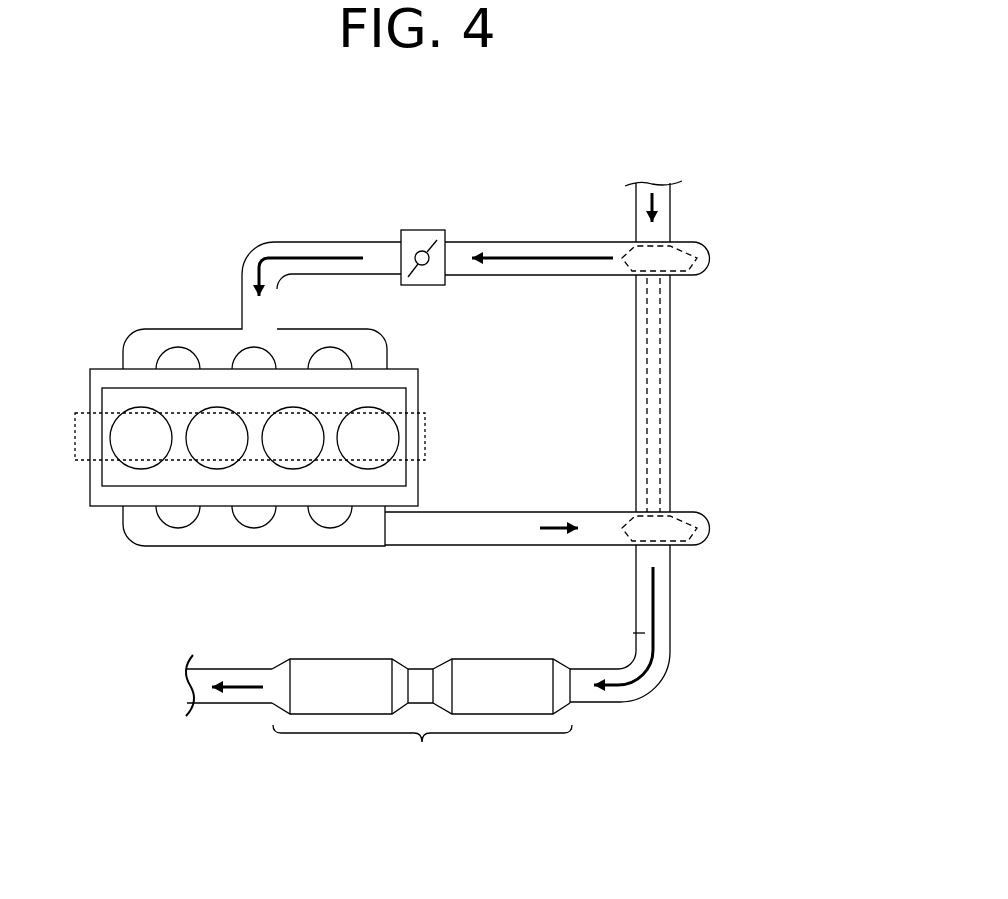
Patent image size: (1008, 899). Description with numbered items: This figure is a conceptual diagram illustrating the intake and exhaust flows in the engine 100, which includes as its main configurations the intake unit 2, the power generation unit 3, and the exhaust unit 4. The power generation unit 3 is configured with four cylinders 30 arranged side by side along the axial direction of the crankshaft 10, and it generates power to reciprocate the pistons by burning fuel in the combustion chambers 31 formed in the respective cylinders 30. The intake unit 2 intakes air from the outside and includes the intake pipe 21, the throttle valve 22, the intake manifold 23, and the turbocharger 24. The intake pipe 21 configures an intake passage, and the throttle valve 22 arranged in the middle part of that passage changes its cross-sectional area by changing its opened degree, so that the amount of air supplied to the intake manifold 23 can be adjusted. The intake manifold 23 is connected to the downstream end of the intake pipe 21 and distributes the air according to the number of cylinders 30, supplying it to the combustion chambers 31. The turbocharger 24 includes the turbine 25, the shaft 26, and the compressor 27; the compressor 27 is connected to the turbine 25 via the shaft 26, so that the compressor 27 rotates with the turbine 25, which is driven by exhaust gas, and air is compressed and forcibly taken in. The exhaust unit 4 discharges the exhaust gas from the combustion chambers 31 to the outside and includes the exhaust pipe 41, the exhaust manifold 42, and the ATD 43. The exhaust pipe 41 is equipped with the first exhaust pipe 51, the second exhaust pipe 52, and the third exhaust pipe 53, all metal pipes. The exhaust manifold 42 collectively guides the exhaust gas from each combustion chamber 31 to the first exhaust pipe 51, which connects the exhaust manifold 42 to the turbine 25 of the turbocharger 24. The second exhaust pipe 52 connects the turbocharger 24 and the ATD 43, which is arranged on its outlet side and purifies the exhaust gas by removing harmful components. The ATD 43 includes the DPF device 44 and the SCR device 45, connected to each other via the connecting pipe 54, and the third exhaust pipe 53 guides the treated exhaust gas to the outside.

The engine 100 is at (188, 182).
The intake unit 2 is at (210, 247).
The power generation unit 3 is at (438, 380).
The exhaust unit 4 is at (688, 665).
The crankshaft 10 is at (113, 412).
The intake pipe 21 is at (495, 250).
The throttle valve 22 is at (421, 230).
The intake manifold 23 is at (147, 338).
The turbocharger 24 is at (685, 350).
The turbine 25 is at (686, 552).
The shaft 26 is at (665, 425).
The compressor 27 is at (688, 235).
The cylinders 30 is at (150, 473).
The combustion chambers 31 is at (387, 428).
The exhaust pipe 41 is at (195, 718).
The exhaust manifold 42 is at (147, 545).
The ATD (exhaust gas purification device) 43 is at (422, 750).
The DPF device 44 is at (507, 707).
The SCR device 45 is at (312, 707).
The first exhaust pipe 51 is at (510, 532).
The second exhaust pipe (connection pipe) 52 is at (636, 633).
The third exhaust pipe 53 is at (227, 703).
The connecting pipe 54 is at (422, 675).